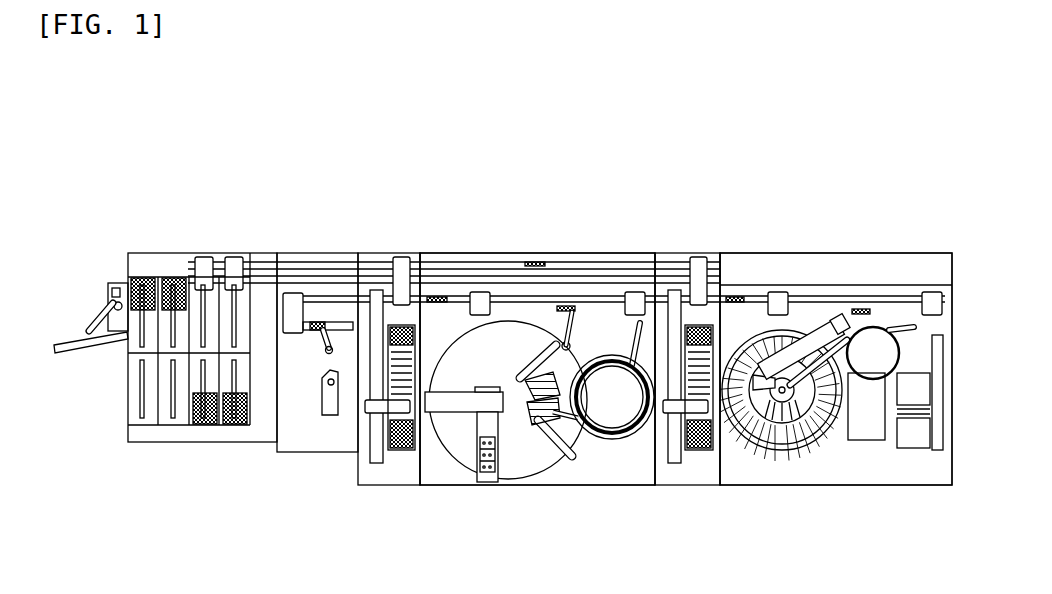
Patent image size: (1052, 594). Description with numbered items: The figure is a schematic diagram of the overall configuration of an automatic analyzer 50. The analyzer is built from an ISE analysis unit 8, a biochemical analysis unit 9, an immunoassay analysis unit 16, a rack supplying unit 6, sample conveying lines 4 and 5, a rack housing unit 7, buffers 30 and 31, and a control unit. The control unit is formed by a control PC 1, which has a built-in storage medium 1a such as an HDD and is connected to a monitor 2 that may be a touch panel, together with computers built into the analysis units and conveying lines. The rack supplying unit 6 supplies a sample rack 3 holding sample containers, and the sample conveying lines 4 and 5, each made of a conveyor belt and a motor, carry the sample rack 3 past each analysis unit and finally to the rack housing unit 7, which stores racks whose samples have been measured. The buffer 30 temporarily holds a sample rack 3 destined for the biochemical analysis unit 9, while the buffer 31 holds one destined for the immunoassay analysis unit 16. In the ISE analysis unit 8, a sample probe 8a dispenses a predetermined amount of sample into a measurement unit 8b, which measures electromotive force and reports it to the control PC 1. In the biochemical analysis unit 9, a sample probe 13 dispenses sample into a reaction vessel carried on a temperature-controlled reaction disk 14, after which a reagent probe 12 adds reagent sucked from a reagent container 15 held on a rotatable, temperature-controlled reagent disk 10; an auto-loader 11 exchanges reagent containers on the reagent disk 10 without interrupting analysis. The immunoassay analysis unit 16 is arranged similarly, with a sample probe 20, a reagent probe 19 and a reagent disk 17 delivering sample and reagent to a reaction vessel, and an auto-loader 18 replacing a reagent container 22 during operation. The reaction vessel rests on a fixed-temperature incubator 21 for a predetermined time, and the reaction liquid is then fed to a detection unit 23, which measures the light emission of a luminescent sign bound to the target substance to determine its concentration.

The automatic analyzer 50 is at (185, 100).
The control PC 1 is at (118, 282).
The storage medium 1a is at (112, 283).
The monitor 2 is at (95, 360).
The sample rack 3 is at (145, 300).
The sample conveying line 4 is at (175, 285).
The sample conveying line 5 is at (289, 262).
The rack supplying unit 6 is at (147, 425).
The rack housing unit 7 is at (248, 425).
The ISE analysis unit 8 is at (310, 425).
The sample probe 8a is at (325, 328).
The measurement unit 8b is at (330, 415).
The biochemical analysis unit 9 is at (435, 475).
The reagent disk 10 is at (460, 455).
The auto-loader 11 is at (484, 475).
The reagent probe 12 is at (563, 343).
The sample probe 13 is at (570, 345).
The reaction disk 14 is at (605, 440).
The reagent container 15 is at (545, 455).
The immunoassay analysis unit 16 is at (735, 470).
The reagent disk 17 is at (768, 447).
The auto-loader 18 is at (775, 445).
The reagent probe 19 is at (818, 365).
The sample probe 20 is at (892, 325).
The incubator 21 is at (870, 330).
The reagent container 22 is at (808, 445).
The detection unit 23 is at (863, 430).
The buffer 30 is at (393, 475).
The buffer 31 is at (693, 473).